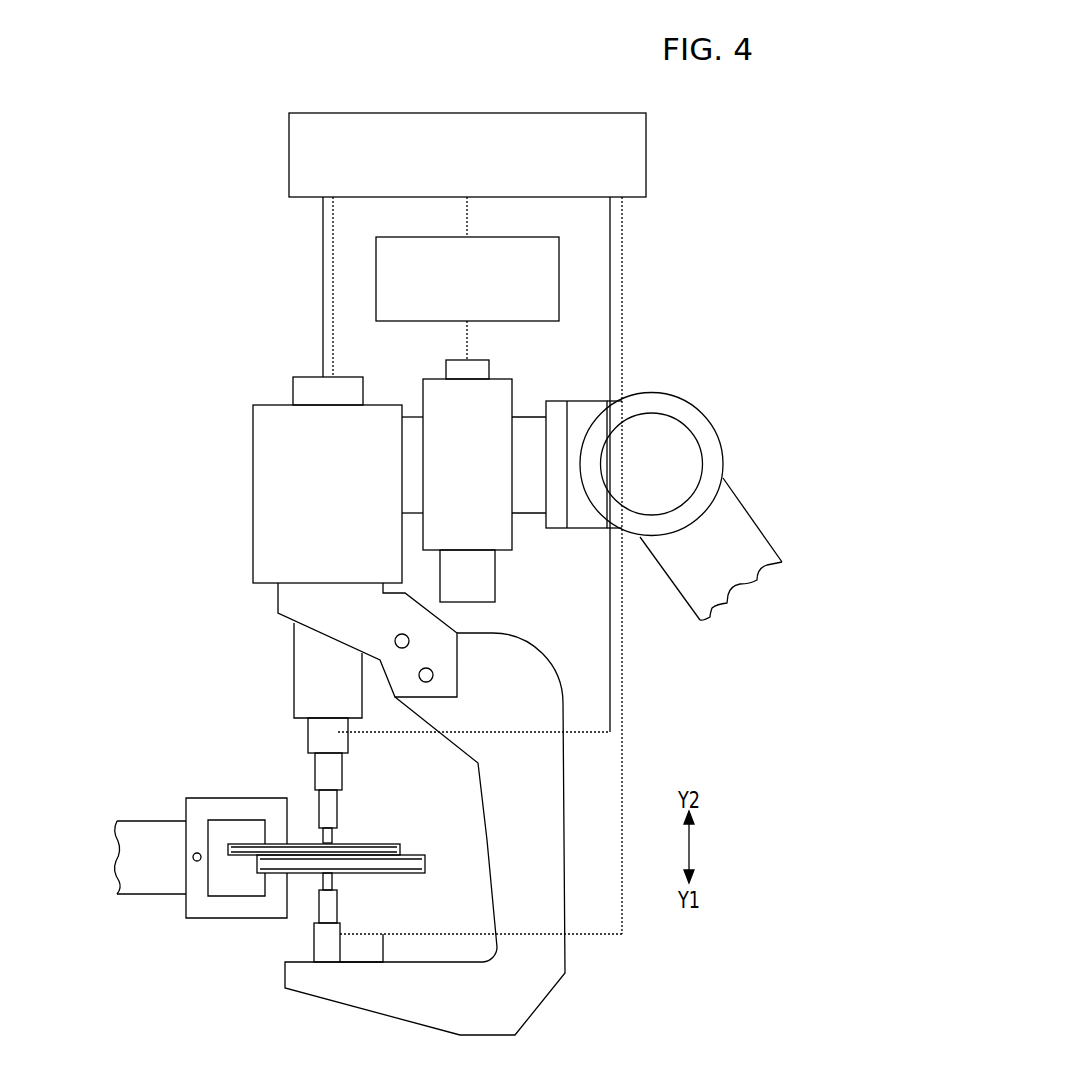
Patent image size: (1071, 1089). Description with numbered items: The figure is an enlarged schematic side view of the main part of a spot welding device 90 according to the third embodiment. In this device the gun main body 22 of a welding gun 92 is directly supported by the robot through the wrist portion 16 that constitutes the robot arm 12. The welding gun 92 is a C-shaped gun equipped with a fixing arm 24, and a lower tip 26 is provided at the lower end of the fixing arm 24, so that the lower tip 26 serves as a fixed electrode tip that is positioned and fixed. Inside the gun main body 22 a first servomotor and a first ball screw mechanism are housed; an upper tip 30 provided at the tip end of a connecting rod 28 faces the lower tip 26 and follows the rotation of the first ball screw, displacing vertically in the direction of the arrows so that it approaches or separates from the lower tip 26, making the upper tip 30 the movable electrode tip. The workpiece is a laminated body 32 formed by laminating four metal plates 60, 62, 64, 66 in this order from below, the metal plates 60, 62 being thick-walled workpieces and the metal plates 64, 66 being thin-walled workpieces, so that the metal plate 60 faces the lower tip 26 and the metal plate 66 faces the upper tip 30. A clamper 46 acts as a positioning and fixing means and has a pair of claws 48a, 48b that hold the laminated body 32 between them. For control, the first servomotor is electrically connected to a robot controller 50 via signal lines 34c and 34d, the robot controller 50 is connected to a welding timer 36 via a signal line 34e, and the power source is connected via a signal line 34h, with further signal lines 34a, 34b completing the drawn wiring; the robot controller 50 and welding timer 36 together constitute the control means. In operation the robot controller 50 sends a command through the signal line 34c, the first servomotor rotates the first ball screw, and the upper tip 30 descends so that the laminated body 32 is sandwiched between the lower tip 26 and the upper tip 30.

The spot welding device 90 is at (193, 97).
The robot controller 50 is at (491, 111).
The welding timer 36 is at (528, 236).
The signal line 34a is at (405, 734).
The signal line 34b is at (515, 933).
The signal line 34c is at (321, 227).
The signal line 34d is at (335, 325).
The signal line 34e is at (465, 212).
The signal line 34h is at (468, 345).
The welding gun 92 is at (250, 396).
The gun main body 22 is at (265, 502).
The wrist portion 16 is at (502, 540).
The arm 12 is at (724, 409).
The fixing arm 24 is at (532, 993).
The connecting rod 28 is at (303, 677).
The upper tip 30 is at (334, 834).
The lower tip 26 is at (334, 880).
The laminated body 32 is at (348, 861).
The metal plate 60 is at (403, 869).
The metal plate 62 is at (423, 858).
The clamper 46 is at (142, 813).
The claw 48a is at (190, 908).
The claw 48b is at (200, 805).
The metal plate 64 is at (237, 858).
The metal plate 66 is at (248, 843).